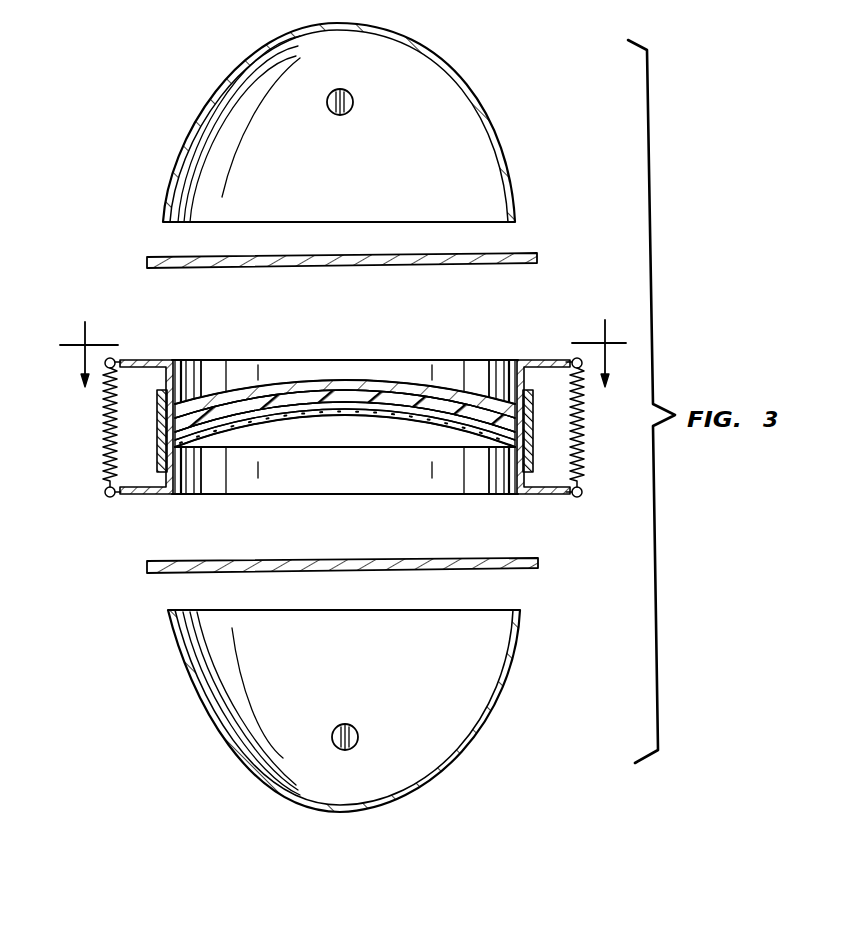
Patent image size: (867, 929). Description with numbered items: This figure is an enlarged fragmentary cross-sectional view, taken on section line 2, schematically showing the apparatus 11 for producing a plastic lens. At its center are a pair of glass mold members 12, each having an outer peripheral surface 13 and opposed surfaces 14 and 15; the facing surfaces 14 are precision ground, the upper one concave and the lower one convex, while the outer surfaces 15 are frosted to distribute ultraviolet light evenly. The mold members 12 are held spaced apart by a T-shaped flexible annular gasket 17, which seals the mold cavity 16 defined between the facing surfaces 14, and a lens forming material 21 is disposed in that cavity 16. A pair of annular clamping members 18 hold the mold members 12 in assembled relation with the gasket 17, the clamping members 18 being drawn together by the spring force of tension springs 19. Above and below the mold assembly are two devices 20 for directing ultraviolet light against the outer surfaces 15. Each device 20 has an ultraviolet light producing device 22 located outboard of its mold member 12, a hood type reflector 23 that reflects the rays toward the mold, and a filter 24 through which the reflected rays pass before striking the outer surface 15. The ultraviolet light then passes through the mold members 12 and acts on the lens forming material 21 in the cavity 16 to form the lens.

The section line 2- 2 is at (343, 349).
The apparatus 11 is at (174, 135).
The mold members 12 is at (465, 382).
The outer peripheral surface 13 is at (523, 394).
The inner surfaces 14 is at (334, 392).
The outer surfaces 15 is at (292, 380).
The mold cavity 16 is at (423, 398).
The T-shaped flexible annular gasket 17 is at (158, 413).
The annular clamping members 18 is at (218, 366).
The tension springs 19 is at (103, 415).
The device for directing rays of ultraviolet light 20 is at (492, 87).
The lens forming material 21 is at (260, 380).
The ultraviolet light producing device 22 is at (353, 106).
The hood type reflector 23 is at (227, 82).
The filter 24 is at (538, 258).